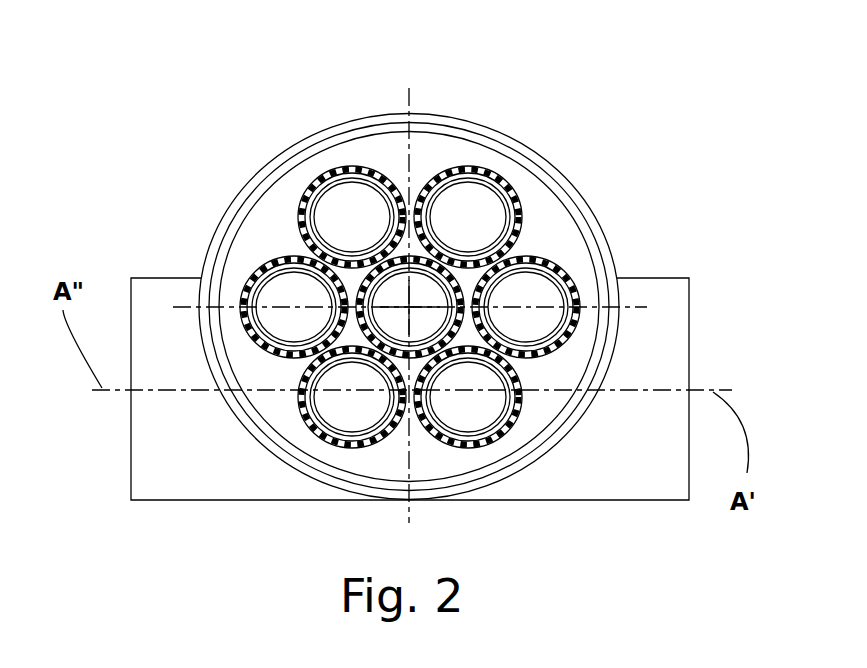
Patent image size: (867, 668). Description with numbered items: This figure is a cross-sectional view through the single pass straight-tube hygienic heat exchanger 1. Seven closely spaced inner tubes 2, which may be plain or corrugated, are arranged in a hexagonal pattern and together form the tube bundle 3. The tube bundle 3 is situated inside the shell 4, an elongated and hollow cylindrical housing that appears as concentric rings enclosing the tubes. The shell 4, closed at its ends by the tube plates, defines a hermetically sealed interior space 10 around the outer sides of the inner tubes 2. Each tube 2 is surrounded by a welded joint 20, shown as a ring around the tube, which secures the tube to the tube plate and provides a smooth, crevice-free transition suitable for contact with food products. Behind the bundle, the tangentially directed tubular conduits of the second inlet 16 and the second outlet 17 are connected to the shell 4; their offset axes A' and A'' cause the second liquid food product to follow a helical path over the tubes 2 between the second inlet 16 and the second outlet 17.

The heat exchanger 1 is at (242, 107).
The inner tubes 2 is at (361, 168).
The tube bundle 3 is at (385, 150).
The shell 4 is at (575, 190).
The interior space 10 is at (275, 203).
The second inlet 16 is at (652, 488).
The second outlet 17 is at (163, 455).
The welded joint 20 is at (312, 183).